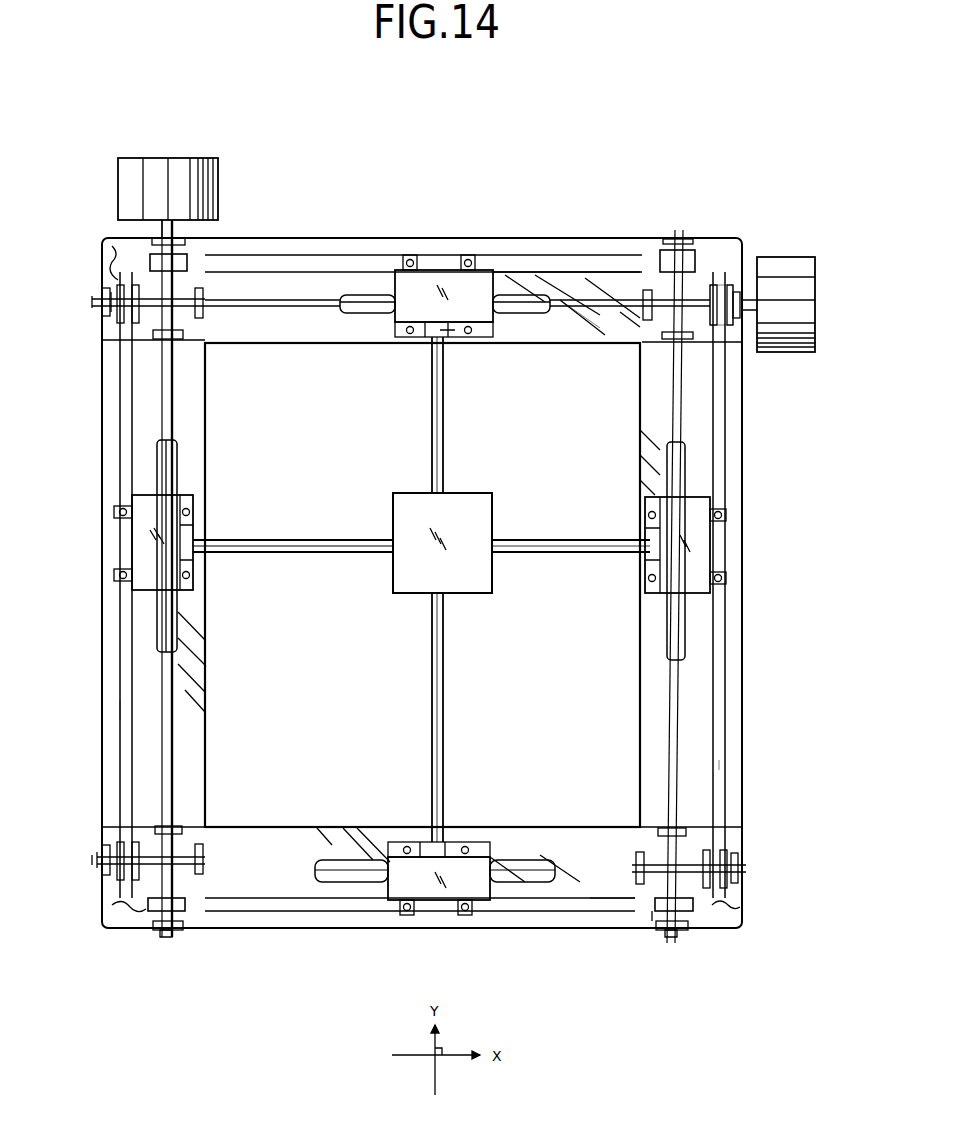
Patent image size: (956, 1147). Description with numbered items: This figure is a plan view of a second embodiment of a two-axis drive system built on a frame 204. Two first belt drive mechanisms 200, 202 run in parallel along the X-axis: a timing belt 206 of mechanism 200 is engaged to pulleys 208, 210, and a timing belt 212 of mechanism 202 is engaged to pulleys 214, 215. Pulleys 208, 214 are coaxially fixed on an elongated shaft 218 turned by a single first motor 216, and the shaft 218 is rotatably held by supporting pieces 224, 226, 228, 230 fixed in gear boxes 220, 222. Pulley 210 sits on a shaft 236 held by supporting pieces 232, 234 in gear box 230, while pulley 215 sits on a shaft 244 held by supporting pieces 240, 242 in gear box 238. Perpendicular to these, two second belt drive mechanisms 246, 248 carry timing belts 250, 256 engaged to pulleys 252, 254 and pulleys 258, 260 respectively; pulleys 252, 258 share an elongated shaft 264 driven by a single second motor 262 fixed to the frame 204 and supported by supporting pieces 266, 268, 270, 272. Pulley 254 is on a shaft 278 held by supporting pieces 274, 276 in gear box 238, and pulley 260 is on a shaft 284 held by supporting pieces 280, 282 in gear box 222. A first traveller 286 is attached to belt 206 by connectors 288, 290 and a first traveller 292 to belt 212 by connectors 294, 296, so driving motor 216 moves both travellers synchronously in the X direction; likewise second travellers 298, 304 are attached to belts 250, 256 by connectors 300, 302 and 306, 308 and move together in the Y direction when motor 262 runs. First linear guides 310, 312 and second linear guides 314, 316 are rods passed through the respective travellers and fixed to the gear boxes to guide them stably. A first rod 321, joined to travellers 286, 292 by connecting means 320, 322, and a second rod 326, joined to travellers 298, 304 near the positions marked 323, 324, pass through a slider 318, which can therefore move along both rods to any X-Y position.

The first belt drive mechanism 200 is at (305, 245).
The first belt drive mechanism 202 is at (300, 905).
The frame 204 is at (744, 715).
The timing belt 206 is at (605, 250).
The pulley 208 is at (186, 255).
The pulley 210 is at (735, 262).
The timing belt 212 is at (556, 900).
The pulley 214 is at (170, 937).
The pulley 215 is at (675, 937).
The first motor 216 is at (200, 158).
The elongated shaft 218 is at (176, 722).
The gear box 220 is at (104, 246).
The gear box 222 is at (112, 920).
The supporting piece 224 is at (160, 236).
The supporting piece 226 is at (200, 322).
The supporting piece 228 is at (200, 855).
The supporting piece / gear box 230 is at (700, 250).
The supporting piece 232 is at (692, 232).
The supporting piece 234 is at (672, 332).
The shaft 236 is at (528, 305).
The gear box 238 is at (738, 915).
The supporting piece 240 is at (660, 855).
The supporting piece 242 is at (653, 922).
The shaft 244 is at (640, 865).
The second belt drive mechanism 246 is at (727, 452).
The second belt drive mechanism 248 is at (118, 466).
The timing belt 250 is at (726, 765).
The pulley 252 is at (722, 342).
The pulley 254 is at (722, 862).
The timing belt 256 is at (120, 712).
The pulley 258 is at (104, 322).
The pulley 260 is at (104, 858).
The second motor 262 is at (816, 312).
The elongated shaft 264 is at (300, 312).
The supporting piece 266 is at (745, 292).
The supporting piece 268 is at (643, 278).
The supporting piece 270 is at (206, 296).
The supporting piece 272 is at (113, 290).
The supporting piece 274 is at (740, 875).
The supporting piece 276 is at (616, 900).
The shaft 278 is at (690, 845).
The supporting piece 280 is at (205, 866).
The supporting piece 282 is at (102, 878).
The shaft 284 is at (117, 842).
The first traveller 286 is at (410, 325).
The connector 288 is at (468, 255).
The connector 290 is at (410, 255).
The first traveller 292 is at (452, 868).
The connector 294 is at (460, 900).
The connector 296 is at (405, 915).
The second traveller 298 is at (711, 552).
The connector 300 is at (727, 515).
The connector 302 is at (727, 578).
The second traveller 304 is at (140, 550).
The connector 306 is at (116, 512).
The connector 308 is at (118, 580).
The first linear guide 310 is at (510, 292).
The first linear guide 312 is at (350, 880).
The second linear guide 314 is at (668, 628).
The second linear guide 316 is at (170, 628).
The slider 318 is at (400, 578).
The connecting means 320 is at (455, 337).
The first rod 321 is at (444, 442).
The connecting means 322 is at (432, 845).
The central right horizontal shaft 323 is at (650, 540).
The left carriage bolt plate 324 is at (187, 540).
The second rod 326 is at (335, 540).